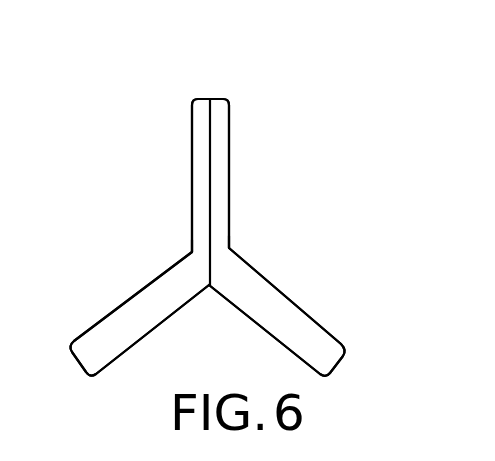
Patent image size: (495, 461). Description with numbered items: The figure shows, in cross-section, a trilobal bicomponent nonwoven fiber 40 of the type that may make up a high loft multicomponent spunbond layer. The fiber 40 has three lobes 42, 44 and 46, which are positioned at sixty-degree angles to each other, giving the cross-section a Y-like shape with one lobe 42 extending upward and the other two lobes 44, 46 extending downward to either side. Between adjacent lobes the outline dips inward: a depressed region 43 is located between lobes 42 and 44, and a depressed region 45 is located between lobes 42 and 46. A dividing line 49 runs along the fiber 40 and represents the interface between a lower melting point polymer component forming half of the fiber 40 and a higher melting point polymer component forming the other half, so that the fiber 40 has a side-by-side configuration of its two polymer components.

The trilobal bicomponent nonwoven fiber 40 is at (340, 178).
The lobe 42 is at (230, 117).
The dividing line 49 is at (210, 148).
The depressed region 43 is at (191, 250).
The depressed region 45 is at (229, 248).
The lobe 44 is at (105, 322).
The lobe 46 is at (307, 340).